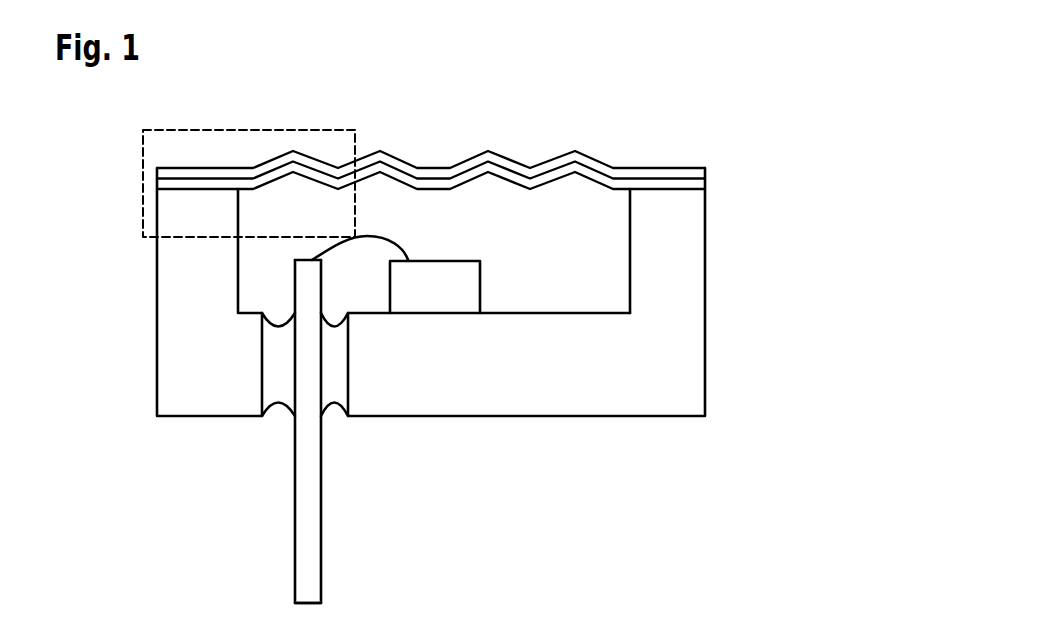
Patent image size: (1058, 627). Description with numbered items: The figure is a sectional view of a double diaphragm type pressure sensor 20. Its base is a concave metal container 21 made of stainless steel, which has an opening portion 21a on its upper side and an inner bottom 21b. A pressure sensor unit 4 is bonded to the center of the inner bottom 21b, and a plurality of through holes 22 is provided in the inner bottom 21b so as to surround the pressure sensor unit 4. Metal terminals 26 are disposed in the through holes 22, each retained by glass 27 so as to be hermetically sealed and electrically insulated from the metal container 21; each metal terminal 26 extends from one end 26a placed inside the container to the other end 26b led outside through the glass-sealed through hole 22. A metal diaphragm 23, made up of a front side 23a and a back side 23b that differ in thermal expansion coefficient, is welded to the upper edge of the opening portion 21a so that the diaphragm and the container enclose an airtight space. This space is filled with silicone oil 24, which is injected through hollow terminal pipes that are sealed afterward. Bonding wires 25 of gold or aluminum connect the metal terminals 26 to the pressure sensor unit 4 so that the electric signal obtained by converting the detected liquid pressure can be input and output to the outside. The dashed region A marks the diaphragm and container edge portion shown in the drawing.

The double diaphragm type pressure sensor 20 is at (733, 40).
The concave metal container 21 is at (673, 338).
The opening portion 21a is at (627, 212).
The inner bottom 21b is at (573, 312).
The through holes 22 is at (348, 392).
The metal diaphragm 23 is at (717, 162).
The front side of metal diaphragm 23a is at (670, 166).
The back side of metal diaphragm 23b is at (662, 189).
The silicone oil 24 is at (422, 227).
The bonding wires 25 is at (374, 230).
The metal terminals 26 is at (321, 520).
The one ends of metal terminals 26a is at (292, 259).
The other ends of metal terminals 26b is at (321, 602).
The glass 27 is at (283, 384).
The pressure sensor unit 4 is at (463, 293).
The region A is at (207, 130).